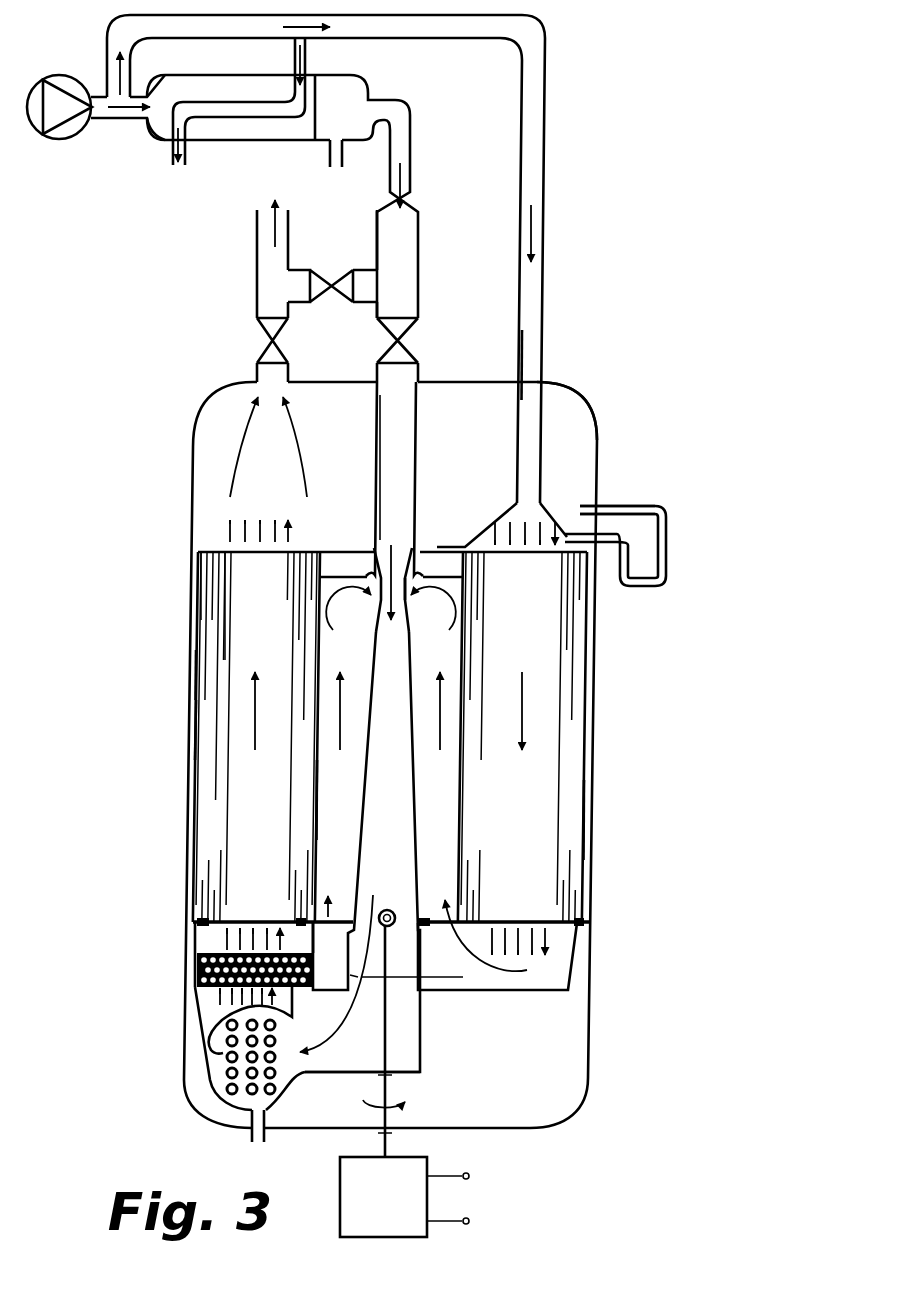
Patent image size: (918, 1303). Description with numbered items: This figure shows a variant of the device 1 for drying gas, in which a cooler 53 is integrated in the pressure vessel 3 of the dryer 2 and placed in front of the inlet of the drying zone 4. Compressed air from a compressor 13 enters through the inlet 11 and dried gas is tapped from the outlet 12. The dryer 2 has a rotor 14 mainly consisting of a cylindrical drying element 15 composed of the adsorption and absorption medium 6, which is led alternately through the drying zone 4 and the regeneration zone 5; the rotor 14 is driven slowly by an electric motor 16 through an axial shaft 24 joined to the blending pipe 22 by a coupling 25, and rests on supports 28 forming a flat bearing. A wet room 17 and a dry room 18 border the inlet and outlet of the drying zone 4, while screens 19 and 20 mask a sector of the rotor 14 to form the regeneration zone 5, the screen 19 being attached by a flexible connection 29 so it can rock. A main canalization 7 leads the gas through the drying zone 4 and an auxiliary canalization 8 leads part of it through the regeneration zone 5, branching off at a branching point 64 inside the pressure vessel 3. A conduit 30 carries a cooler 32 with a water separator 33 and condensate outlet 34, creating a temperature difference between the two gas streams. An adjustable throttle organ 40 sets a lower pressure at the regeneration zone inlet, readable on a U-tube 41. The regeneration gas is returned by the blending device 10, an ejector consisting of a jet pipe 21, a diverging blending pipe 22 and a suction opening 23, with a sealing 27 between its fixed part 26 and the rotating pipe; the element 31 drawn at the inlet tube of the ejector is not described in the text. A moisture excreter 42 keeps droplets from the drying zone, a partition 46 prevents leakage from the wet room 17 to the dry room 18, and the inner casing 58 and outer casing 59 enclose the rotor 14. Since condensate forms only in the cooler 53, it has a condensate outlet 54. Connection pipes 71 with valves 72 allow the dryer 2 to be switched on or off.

The device 1 is at (76, 1132).
The dryer 2 is at (183, 422).
The pressure vessel 3 is at (598, 452).
The drying zone 4 is at (233, 768).
The regeneration zone 5 is at (530, 805).
The adsorption and/or absorption medium 6 is at (583, 836).
The main canalization 7 is at (425, 371).
The auxiliary canalization 8 is at (546, 285).
The blending device 10 is at (430, 645).
The inlet 11 is at (104, 122).
The outlet 12 is at (260, 232).
The compressor 13 is at (59, 82).
The rotor 14 is at (193, 670).
The drying element 15 is at (243, 630).
The electric motor 16 is at (440, 1157).
The wet room 17 is at (357, 1067).
The dry room 18 is at (207, 452).
The screen 19 is at (492, 523).
The screen 20 is at (540, 990).
The jet pipe 21 is at (383, 570).
The blending pipe 22 is at (415, 790).
The suction opening 23 is at (366, 600).
The axial shaft 24 is at (390, 1038).
The coupling 25 is at (397, 903).
The fixed part 26 is at (415, 432).
The sealing 27 is at (415, 570).
The supports 28 is at (302, 920).
The flexible connection 29 is at (540, 495).
The conduit 30 is at (408, 118).
The tube wall 31 is at (405, 403).
The cooler 32 is at (272, 147).
The water separator 33 is at (357, 82).
The condensate outlet 34 is at (345, 152).
The adjustable throttle organ 40 is at (529, 352).
The U-tube 41 is at (645, 578).
The moisture excreter 42 is at (195, 972).
The partition 46 is at (195, 575).
The cooler 53 is at (215, 1065).
The condensate outlet 54 is at (252, 1132).
The inner casing 58 is at (326, 806).
The outer casing 59 is at (193, 718).
The branching point 64 is at (125, 128).
The connection pipes 71 is at (297, 272).
The valves 72 is at (322, 280).